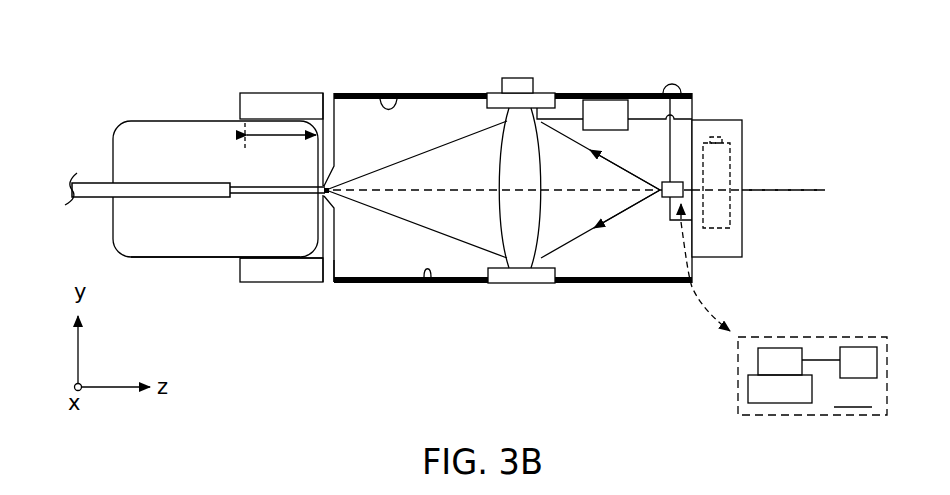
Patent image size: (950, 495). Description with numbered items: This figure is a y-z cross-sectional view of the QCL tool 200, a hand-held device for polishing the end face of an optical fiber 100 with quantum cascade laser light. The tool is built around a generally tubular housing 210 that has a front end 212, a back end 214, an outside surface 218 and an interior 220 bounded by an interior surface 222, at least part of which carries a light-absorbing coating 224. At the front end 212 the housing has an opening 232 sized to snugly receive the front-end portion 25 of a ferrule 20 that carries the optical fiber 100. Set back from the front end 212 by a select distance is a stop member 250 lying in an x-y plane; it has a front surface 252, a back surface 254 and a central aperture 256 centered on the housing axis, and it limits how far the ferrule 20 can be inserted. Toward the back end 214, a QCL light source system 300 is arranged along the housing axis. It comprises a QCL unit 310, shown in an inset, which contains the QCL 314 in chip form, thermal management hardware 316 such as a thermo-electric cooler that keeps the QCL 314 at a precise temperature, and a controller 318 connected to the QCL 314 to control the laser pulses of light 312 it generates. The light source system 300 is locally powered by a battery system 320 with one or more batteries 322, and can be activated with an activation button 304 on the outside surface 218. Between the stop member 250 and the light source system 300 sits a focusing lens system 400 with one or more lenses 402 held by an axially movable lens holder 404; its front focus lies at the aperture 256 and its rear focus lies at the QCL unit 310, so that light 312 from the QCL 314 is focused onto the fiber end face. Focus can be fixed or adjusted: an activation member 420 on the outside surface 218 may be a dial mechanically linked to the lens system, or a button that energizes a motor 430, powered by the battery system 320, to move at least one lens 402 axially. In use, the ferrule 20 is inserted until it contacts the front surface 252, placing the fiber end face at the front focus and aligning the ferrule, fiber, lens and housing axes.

The QCL tool 200 is at (163, 52).
The ferrule 20 is at (135, 110).
The optical fiber 100 is at (97, 183).
The front end 212 is at (241, 97).
The front surface 252 is at (312, 250).
The front-end portion 25 is at (266, 262).
The opening 232 is at (245, 246).
The stop member 250 is at (334, 112).
The housing 210 is at (665, 42).
The outside surface 218 is at (420, 92).
The interior 220 is at (595, 264).
The interior surface 222 is at (381, 94).
The light-absorbing coating 224 is at (428, 277).
The back surface 254 is at (335, 262).
The back end 214 is at (693, 107).
The activation button 304 is at (668, 85).
The motor 430 is at (608, 116).
The focusing lens system 400 is at (490, 211).
The activation member 420 is at (520, 78).
The lens holder 404 is at (517, 280).
The lens 402 is at (518, 252).
The central aperture 256 is at (345, 180).
The light 312 is at (583, 230).
The QCL unit 310 is at (662, 183).
The QCL 314 is at (798, 369).
The thermal management hardware 316 is at (798, 397).
The controller 318 is at (876, 370).
The QCL light source system 300 is at (661, 230).
The battery system 320 is at (723, 258).
The battery 322 is at (728, 152).